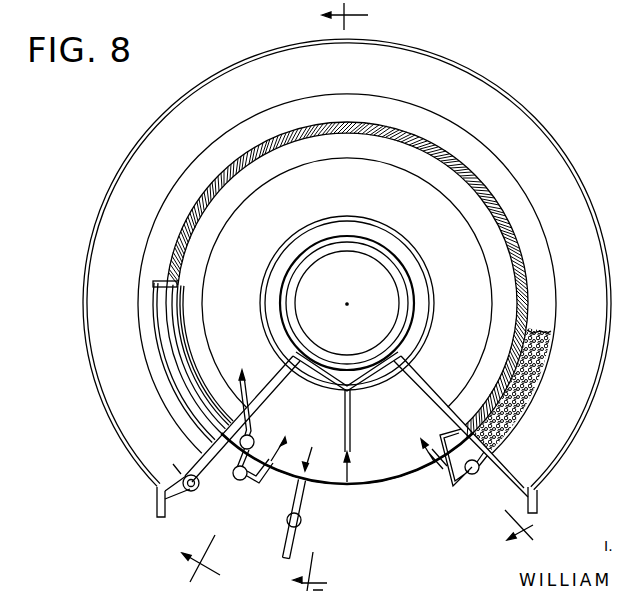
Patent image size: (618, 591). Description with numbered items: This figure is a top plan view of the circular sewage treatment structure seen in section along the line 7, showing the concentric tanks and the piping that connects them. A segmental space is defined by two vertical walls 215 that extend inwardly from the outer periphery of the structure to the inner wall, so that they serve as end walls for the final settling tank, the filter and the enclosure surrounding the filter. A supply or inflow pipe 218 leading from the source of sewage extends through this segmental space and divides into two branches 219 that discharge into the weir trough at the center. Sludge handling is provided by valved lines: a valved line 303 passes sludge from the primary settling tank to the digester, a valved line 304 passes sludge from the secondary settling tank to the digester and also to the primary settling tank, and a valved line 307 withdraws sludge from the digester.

The vertical walls 215 is at (267, 388).
The supply or inflow pipe 218 is at (351, 440).
The branches 219 is at (313, 372).
The valved line 303 is at (442, 472).
The valved line 304 is at (227, 468).
The valved line 307 is at (297, 535).
The section line 7 is at (364, 297).